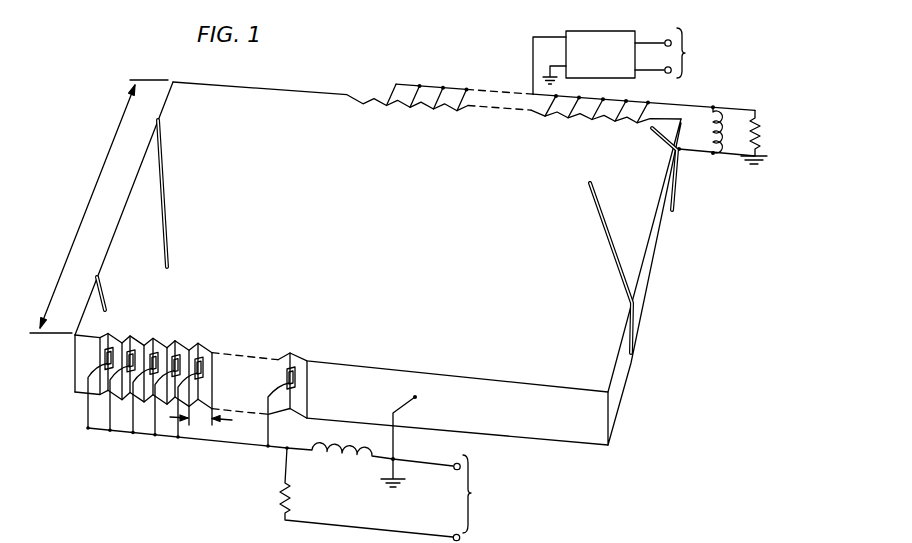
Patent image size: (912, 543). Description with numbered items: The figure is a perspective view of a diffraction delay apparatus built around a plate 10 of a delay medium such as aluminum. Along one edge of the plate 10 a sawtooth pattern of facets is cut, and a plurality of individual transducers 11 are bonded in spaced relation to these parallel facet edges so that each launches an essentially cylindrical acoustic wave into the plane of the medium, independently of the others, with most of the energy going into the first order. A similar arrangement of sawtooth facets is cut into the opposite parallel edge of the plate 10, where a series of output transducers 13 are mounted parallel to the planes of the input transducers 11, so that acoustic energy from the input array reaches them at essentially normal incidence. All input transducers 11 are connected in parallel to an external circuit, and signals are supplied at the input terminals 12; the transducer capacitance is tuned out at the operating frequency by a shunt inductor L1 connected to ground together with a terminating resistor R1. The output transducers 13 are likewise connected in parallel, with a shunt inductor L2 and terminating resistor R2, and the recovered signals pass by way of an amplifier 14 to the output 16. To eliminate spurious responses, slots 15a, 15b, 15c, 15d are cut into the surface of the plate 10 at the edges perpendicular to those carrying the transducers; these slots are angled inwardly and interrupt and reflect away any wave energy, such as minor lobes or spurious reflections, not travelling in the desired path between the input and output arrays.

The plate 10 is at (246, 98).
The input transducers 11 is at (107, 355).
The input terminals 12 is at (455, 468).
The output transducers 13 is at (366, 88).
The amplifier 14 is at (600, 38).
The slot 15a is at (167, 181).
The slot 15b is at (105, 300).
The slot 15c is at (602, 232).
The slot 15d is at (668, 203).
The output terminals 16 is at (695, 55).
The shunt inductor L1 is at (333, 466).
The terminating resistor R1 is at (277, 492).
The shunt inductor L2 is at (727, 140).
The terminating resistor R2 is at (762, 141).